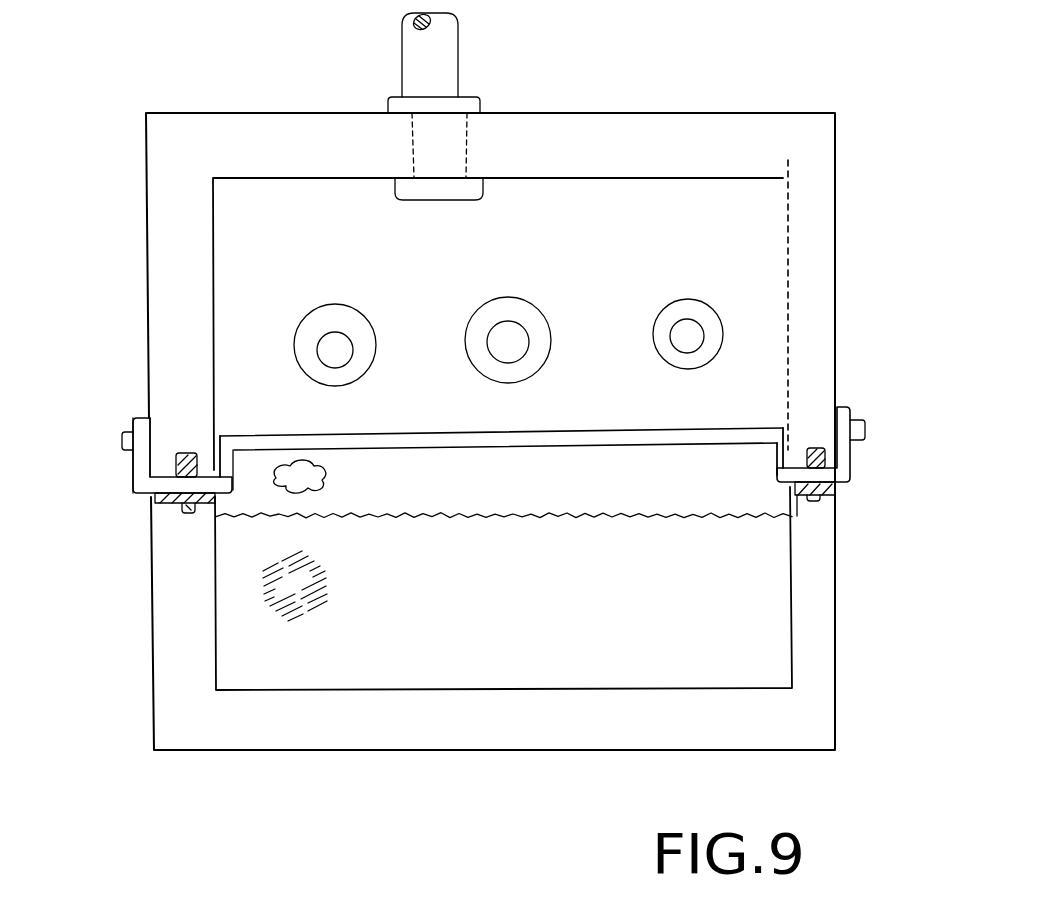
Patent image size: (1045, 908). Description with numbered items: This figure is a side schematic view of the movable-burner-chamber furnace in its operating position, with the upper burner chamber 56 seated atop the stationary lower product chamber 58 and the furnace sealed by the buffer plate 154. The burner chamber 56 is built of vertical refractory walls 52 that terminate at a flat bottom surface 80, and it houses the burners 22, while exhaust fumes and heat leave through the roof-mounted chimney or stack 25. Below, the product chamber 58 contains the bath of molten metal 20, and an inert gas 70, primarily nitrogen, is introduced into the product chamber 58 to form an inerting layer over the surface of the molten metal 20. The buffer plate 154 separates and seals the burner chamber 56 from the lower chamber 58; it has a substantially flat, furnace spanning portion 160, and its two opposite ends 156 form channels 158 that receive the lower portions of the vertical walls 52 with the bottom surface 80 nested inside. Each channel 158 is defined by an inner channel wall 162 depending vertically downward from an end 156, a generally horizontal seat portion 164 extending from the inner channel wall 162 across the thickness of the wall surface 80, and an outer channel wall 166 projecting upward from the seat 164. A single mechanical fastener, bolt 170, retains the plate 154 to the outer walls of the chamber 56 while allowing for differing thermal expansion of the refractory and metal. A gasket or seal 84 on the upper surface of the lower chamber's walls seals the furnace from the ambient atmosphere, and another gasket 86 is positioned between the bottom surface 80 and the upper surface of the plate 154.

The bath of molten metal 20 is at (295, 586).
The burners 22 is at (358, 334).
The chimney or stack 25 is at (445, 63).
The refractory material walls 52 is at (815, 340).
The upper burner chamber 56 is at (766, 261).
The lower product chamber 58 is at (397, 668).
The inert gas 70 is at (318, 478).
The flat bottom surface 80 is at (840, 487).
The gasket or seal 84 is at (153, 497).
The gasket 86 is at (185, 453).
The buffer plate 154 is at (588, 438).
The ends of buffer plate 156 is at (228, 440).
The channels 158 is at (134, 397).
The furnace spanning portion 160 is at (503, 440).
The inner channel wall 162 is at (777, 455).
The seat portion 164 is at (215, 483).
The outer channel wall 166 is at (137, 462).
The bolt 170 is at (120, 445).